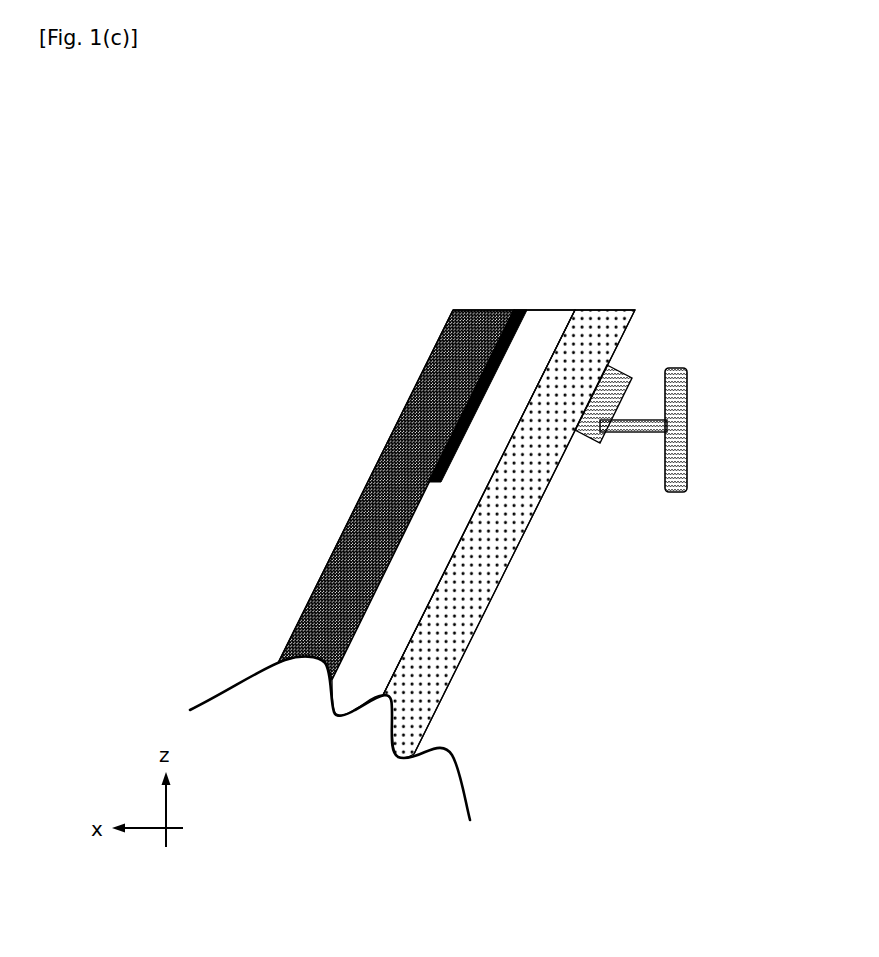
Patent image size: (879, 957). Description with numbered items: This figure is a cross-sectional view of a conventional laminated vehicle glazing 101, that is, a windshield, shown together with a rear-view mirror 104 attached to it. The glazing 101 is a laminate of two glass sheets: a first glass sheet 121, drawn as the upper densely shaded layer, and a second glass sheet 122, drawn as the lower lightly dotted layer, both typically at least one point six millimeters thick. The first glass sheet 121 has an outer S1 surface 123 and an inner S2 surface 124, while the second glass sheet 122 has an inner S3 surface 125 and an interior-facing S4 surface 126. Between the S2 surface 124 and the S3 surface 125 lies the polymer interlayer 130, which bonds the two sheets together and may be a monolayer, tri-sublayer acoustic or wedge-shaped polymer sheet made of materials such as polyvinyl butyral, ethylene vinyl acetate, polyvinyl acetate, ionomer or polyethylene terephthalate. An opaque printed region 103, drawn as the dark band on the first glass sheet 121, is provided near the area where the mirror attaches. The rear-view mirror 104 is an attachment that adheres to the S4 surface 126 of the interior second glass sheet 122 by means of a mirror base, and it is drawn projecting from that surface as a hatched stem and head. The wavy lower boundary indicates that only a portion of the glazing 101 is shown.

The laminated vehicle glazing 101 is at (420, 505).
The opaque printed region 103 is at (515, 310).
The rear-view mirror 104 is at (687, 442).
The first glass sheet 121 is at (377, 497).
The second glass sheet 122 is at (467, 573).
The S1 surface 123 is at (328, 565).
The S2 surface 124 is at (362, 618).
The S3 surface 125 is at (418, 628).
The S4 surface 126 is at (445, 695).
The polymer interlayer 130 is at (540, 325).